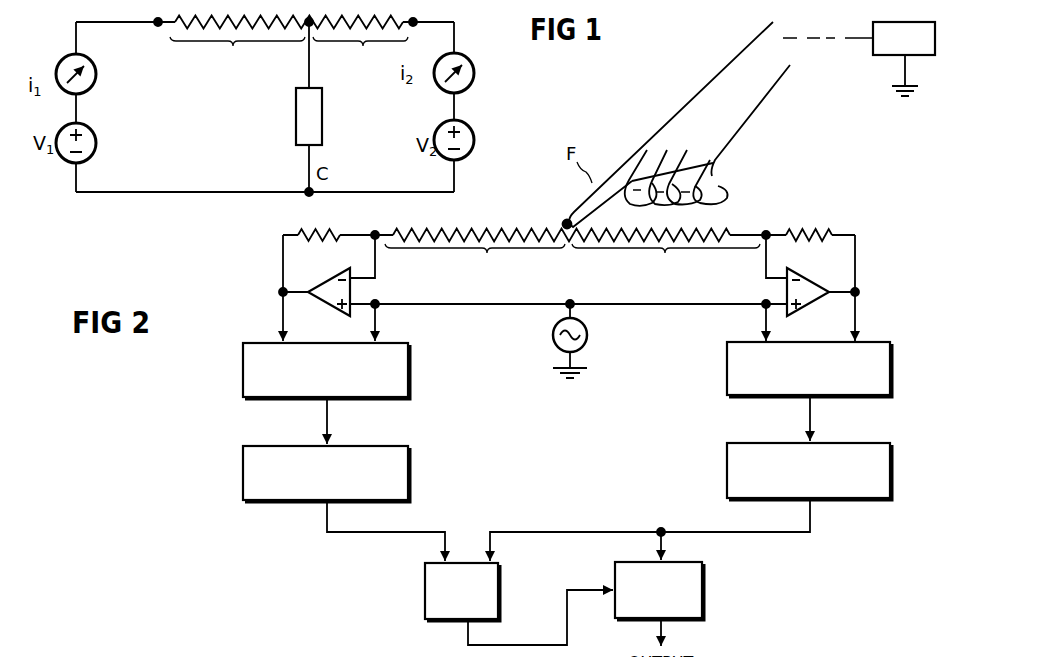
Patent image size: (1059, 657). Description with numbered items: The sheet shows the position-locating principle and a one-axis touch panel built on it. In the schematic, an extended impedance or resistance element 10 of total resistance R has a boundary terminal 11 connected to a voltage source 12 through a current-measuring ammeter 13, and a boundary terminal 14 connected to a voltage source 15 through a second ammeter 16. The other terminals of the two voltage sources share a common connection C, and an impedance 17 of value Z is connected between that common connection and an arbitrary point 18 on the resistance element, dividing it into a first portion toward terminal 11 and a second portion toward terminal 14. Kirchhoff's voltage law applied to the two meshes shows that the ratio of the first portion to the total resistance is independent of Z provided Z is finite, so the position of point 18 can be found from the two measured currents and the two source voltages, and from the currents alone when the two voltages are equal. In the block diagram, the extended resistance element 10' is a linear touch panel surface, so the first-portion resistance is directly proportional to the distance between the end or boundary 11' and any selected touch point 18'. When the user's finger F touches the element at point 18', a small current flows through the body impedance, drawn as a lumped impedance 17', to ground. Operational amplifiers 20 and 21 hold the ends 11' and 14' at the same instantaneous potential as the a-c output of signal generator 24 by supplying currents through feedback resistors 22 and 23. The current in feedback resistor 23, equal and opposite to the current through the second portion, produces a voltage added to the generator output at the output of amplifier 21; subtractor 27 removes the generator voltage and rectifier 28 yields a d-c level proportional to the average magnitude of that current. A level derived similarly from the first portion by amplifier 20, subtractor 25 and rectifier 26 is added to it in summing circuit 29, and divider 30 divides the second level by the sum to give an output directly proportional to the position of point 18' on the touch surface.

In FIG. 1, the extended resistance element 10 is at (289, 43).
In FIG. 1, the boundary terminal 11 is at (145, 37).
In FIG. 1, the voltage source 12 is at (97, 143).
In FIG. 1, the ammeter 13 is at (97, 74).
In FIG. 1, the boundary terminal 14 is at (427, 35).
In FIG. 1, the voltage source 15 is at (475, 140).
In FIG. 1, the ammeter 16 is at (475, 73).
In FIG. 1, the impedance 17 is at (327, 116).
In FIG. 2, the lumped impedance 17' is at (859, 48).
In FIG. 1, the arbitrary point 18 is at (294, 105).
In FIG. 2, the extended resistance element 10' is at (572, 239).
In FIG. 2, the end or boundary 11' is at (379, 218).
In FIG. 2, the end 14' is at (758, 214).
In FIG. 2, the touch point 18' is at (558, 209).
In FIG. 2, the operational amplifier 20 is at (334, 276).
In FIG. 2, the operational amplifier 21 is at (810, 278).
In FIG. 2, the feedback resistor 22 is at (331, 230).
In FIG. 2, the feedback resistor 23 is at (810, 228).
In FIG. 2, the signal generator 24 is at (587, 330).
In FIG. 2, the subtractor 25 is at (410, 369).
In FIG. 2, the rectifier 26 is at (410, 474).
In FIG. 2, the subtractor 27 is at (727, 368).
In FIG. 2, the rectifier 28 is at (727, 474).
In FIG. 2, the summing circuit 29 is at (425, 592).
In FIG. 2, the divider 30 is at (702, 582).